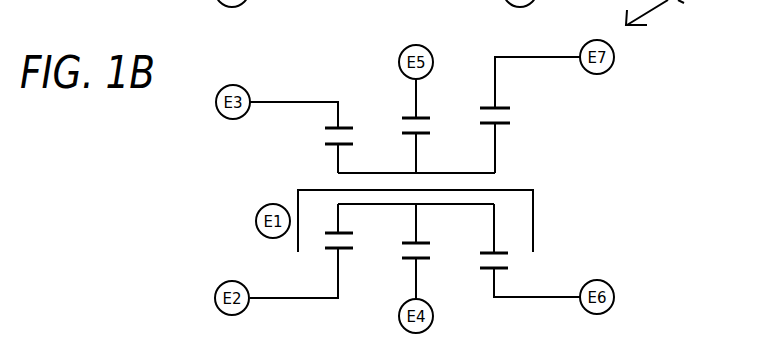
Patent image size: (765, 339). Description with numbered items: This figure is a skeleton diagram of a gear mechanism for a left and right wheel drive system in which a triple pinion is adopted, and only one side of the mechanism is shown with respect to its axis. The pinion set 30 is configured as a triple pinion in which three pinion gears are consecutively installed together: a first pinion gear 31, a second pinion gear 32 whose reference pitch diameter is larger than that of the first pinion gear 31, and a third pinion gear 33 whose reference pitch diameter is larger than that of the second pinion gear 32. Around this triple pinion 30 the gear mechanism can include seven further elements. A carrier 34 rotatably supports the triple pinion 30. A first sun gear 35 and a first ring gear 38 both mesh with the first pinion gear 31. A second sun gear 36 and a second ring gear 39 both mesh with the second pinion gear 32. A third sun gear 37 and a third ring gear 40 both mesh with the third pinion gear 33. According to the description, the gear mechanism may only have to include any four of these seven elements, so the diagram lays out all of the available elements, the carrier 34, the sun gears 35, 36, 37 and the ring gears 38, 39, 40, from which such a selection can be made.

The pinion set 30 is at (506, 167).
The first pinion gear 31 is at (338, 158).
The second pinion gear 32 is at (416, 158).
The third pinion gear 33 is at (495, 158).
The carrier 34 is at (518, 189).
The first sun gear 35 is at (338, 277).
The second sun gear 36 is at (416, 277).
The third sun gear 37 is at (494, 285).
The first ring gear 38 is at (342, 114).
The second ring gear 39 is at (418, 97).
The third ring gear 40 is at (497, 80).